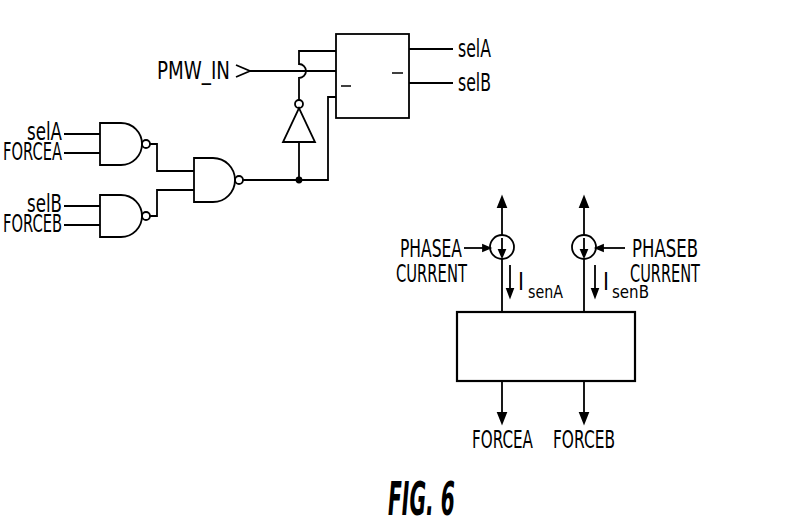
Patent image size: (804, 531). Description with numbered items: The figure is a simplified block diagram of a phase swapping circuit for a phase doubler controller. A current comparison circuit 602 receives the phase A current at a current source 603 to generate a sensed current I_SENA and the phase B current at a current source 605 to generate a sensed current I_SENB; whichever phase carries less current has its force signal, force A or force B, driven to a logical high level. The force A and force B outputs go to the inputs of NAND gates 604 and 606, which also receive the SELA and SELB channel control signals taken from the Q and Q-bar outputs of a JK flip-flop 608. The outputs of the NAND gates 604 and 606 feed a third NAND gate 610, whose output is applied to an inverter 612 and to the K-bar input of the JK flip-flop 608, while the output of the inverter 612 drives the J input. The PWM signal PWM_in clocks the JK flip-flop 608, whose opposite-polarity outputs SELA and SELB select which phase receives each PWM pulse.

The current comparison circuit 602 is at (630, 316).
The current source 603 is at (494, 238).
The NAND gate 604 is at (114, 122).
The current source 605 is at (592, 238).
The NAND gate 606 is at (119, 238).
The JK flip-flop 608 is at (386, 119).
The third NAND gate 610 is at (219, 202).
The inverter 612 is at (293, 124).